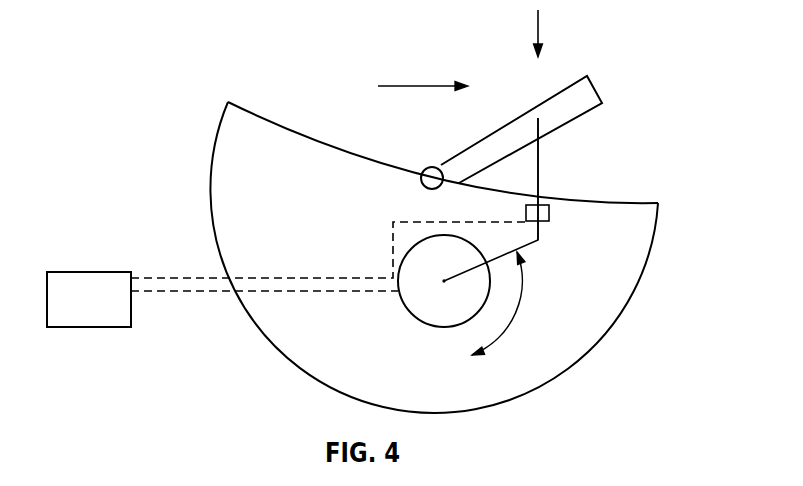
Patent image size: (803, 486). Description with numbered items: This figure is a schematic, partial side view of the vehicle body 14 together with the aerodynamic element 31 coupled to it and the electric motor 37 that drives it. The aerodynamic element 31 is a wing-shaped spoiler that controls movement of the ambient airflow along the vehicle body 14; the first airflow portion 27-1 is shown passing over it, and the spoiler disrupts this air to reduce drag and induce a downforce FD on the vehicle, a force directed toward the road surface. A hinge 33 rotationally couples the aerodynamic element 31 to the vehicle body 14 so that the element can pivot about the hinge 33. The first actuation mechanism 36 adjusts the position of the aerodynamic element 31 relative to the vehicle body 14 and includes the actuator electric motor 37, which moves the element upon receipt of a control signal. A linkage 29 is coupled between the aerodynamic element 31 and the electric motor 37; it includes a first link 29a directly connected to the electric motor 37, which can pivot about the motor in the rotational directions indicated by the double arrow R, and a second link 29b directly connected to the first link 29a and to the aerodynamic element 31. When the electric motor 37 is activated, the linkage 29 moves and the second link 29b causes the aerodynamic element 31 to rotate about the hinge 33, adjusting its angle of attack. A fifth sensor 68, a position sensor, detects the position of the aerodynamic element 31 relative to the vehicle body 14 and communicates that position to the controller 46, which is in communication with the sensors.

The vehicle body 14 is at (315, 137).
The first actuation mechanism 36 is at (373, 357).
The aerodynamic element 31 is at (593, 89).
The hinge 33 is at (422, 184).
The linkage 29 is at (574, 244).
The first link 29a is at (452, 279).
The second link 29b is at (538, 178).
The fifth sensor 68 is at (549, 213).
The electric motor 37 is at (405, 310).
The controller 46 is at (90, 272).
The double arrow R is at (523, 297).
The first airflow portion 27-1 is at (420, 85).
The downforce FD is at (537, 33).